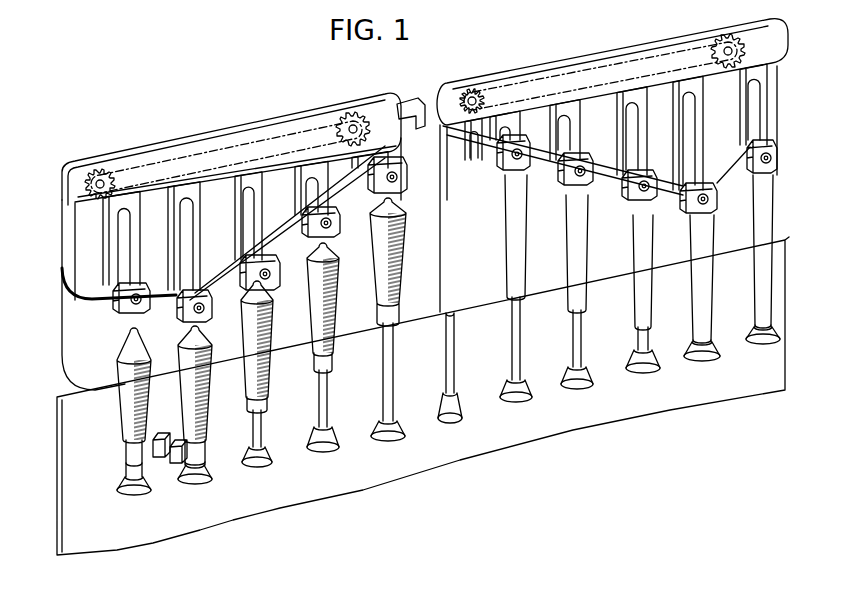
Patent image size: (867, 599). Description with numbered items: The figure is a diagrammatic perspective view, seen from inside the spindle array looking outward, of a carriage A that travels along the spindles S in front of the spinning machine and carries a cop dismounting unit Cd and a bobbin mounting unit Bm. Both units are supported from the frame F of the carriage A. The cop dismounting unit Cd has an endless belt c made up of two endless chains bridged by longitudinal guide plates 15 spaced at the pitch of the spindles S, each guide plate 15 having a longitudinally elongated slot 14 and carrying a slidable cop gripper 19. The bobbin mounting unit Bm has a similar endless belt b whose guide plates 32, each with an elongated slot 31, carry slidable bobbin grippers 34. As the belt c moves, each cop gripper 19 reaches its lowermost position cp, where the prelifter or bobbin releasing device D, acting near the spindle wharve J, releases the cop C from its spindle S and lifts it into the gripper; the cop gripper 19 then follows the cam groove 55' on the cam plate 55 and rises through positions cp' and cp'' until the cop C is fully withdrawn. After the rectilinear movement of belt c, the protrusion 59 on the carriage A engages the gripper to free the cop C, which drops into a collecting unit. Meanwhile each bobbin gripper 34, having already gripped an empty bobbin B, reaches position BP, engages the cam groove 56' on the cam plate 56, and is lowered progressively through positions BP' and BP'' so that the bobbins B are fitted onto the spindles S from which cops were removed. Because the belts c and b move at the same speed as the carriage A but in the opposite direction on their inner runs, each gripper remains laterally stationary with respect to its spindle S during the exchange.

The cop dismounting unit Cd is at (239, 109).
The bobbin mounting unit Bm is at (604, 39).
The endless belt of the cop dismounting unit c is at (175, 150).
The endless belt of the bobbin mounting unit b is at (547, 80).
The cam plate 55 is at (73, 295).
The cam groove 55' is at (99, 289).
The cam plate 56 is at (632, 189).
The cam groove 56' is at (717, 199).
The protrusion 59 is at (412, 101).
The longitudinally elongated slot 14 is at (192, 228).
The longitudinal guide plate 15 is at (192, 198).
The cop gripper 19 is at (122, 310).
The cop gripper starting position CP cp is at (206, 306).
The intermediate cop lifting position CP' cp' is at (270, 279).
The cop lifting position CP'' cp'' is at (335, 231).
The cop C is at (212, 398).
The spindle S is at (261, 425).
The carriage A is at (433, 465).
The frame F is at (695, 402).
The prelifter (bobbin releasing device) D is at (166, 468).
The spindle wharve J is at (194, 468).
The empty bobbin B is at (508, 233).
The bobbin mounting starting position BP is at (501, 161).
The bobbin mounting position BP' is at (589, 189).
The bobbin mounting position BP'' is at (653, 204).
The longitudinally elongated slot 31 is at (686, 110).
The longitudinal guide plate 32 is at (696, 126).
The bobbin gripper 34 is at (778, 157).